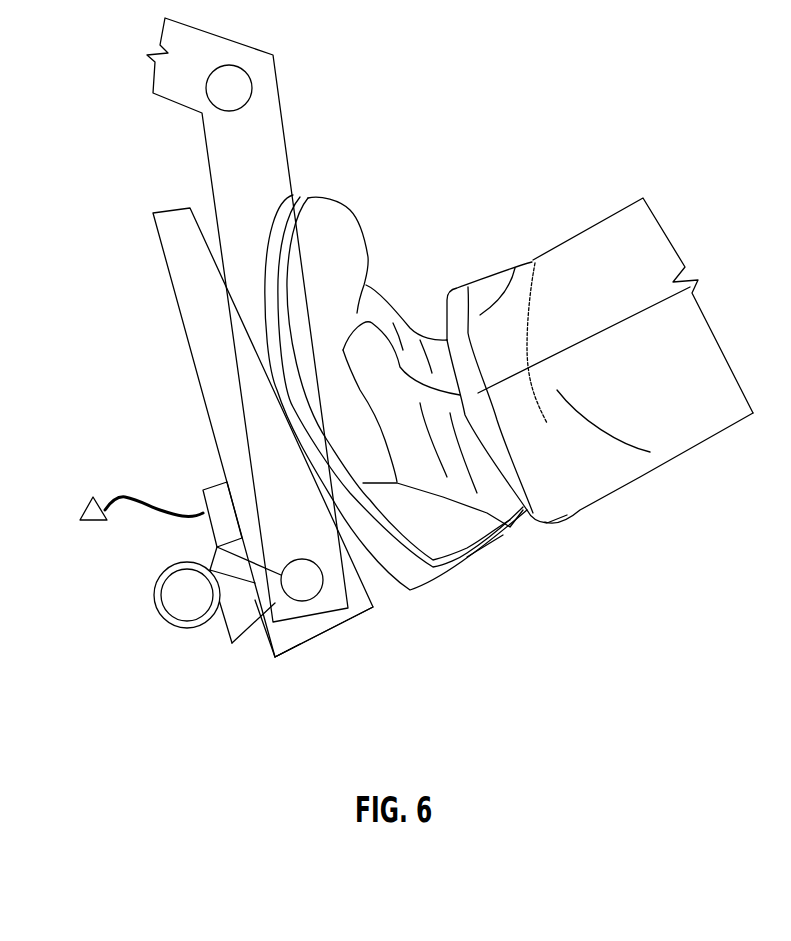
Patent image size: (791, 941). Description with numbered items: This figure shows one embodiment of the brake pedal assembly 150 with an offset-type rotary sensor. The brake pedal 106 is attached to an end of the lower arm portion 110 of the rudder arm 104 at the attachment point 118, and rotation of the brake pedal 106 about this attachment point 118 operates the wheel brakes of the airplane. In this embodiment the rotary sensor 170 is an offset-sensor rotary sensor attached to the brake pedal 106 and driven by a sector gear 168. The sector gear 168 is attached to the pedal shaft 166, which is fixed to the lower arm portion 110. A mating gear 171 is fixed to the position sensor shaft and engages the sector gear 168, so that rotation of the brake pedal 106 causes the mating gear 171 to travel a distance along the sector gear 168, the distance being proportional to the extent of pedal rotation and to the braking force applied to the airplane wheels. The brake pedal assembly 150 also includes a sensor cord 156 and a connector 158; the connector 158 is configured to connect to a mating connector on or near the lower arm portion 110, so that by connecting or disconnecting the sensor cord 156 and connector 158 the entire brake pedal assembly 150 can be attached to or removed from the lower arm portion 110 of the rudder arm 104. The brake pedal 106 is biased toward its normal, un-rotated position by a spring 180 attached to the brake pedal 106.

The rudder arm 104 is at (278, 80).
The brake pedal 106 is at (187, 338).
The lower arm portion 110 is at (292, 182).
The attachment point 118 is at (327, 626).
The brake pedal assembly 150 is at (242, 438).
The sensor cord 156 is at (121, 497).
The connector 158 is at (83, 522).
The pedal shaft 166 is at (370, 607).
The sector gear 168 is at (222, 638).
The rotary sensor 170 is at (153, 597).
The mating gear 171 is at (162, 605).
The spring 180 is at (270, 643).